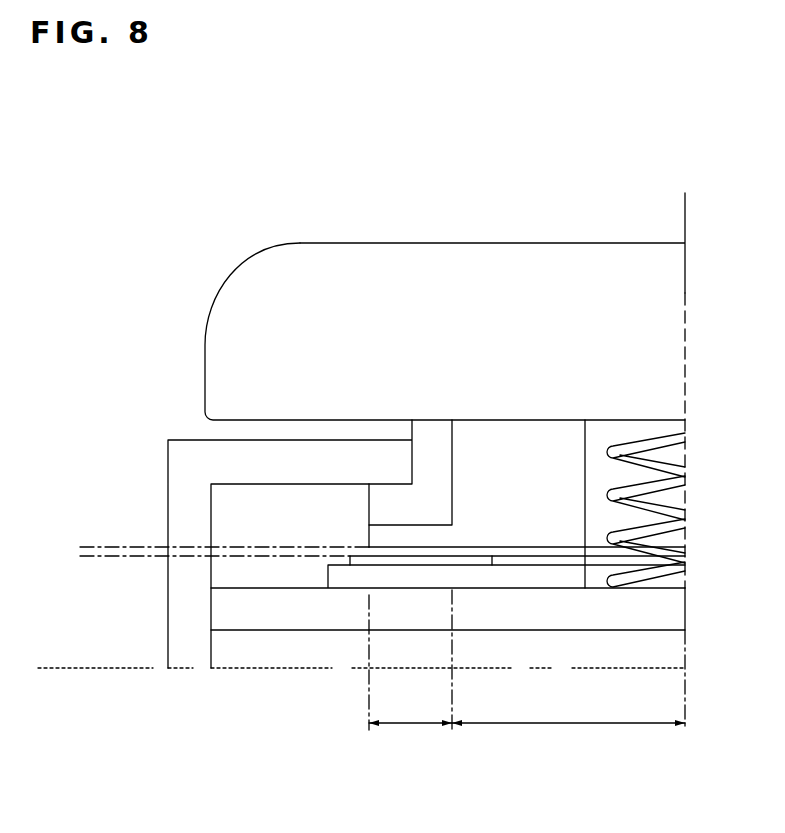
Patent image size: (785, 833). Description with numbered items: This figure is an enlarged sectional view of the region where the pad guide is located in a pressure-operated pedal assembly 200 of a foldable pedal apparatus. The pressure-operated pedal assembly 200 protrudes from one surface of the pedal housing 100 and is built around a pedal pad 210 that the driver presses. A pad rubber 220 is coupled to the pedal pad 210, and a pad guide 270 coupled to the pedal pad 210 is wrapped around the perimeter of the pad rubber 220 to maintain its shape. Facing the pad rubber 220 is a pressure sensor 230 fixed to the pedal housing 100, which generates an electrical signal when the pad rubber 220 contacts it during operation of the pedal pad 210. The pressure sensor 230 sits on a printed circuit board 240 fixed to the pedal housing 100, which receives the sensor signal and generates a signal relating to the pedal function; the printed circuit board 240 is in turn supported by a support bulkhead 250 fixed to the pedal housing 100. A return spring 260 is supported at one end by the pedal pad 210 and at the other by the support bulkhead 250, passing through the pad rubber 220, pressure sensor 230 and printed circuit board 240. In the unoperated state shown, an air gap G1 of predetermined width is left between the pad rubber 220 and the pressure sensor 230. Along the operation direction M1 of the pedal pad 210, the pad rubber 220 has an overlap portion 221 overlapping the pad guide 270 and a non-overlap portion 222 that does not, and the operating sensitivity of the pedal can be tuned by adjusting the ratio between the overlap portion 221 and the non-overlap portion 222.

The pedal housing 100 is at (273, 462).
The pressure-operated pedal assembly 200 is at (607, 222).
The pedal pad 210 is at (563, 265).
The pad rubber 220 is at (527, 450).
The overlap portion 221 is at (410, 670).
The non-overlap portion 222 is at (568, 690).
The pressure sensor 230 is at (403, 560).
The printed circuit board (PCB) 240 is at (350, 578).
The support bulkhead 250 is at (256, 612).
The return spring 260 is at (645, 440).
The pad guide 270 is at (432, 440).
The air gap G1 is at (80, 533).
The operation direction M1 is at (655, 223).